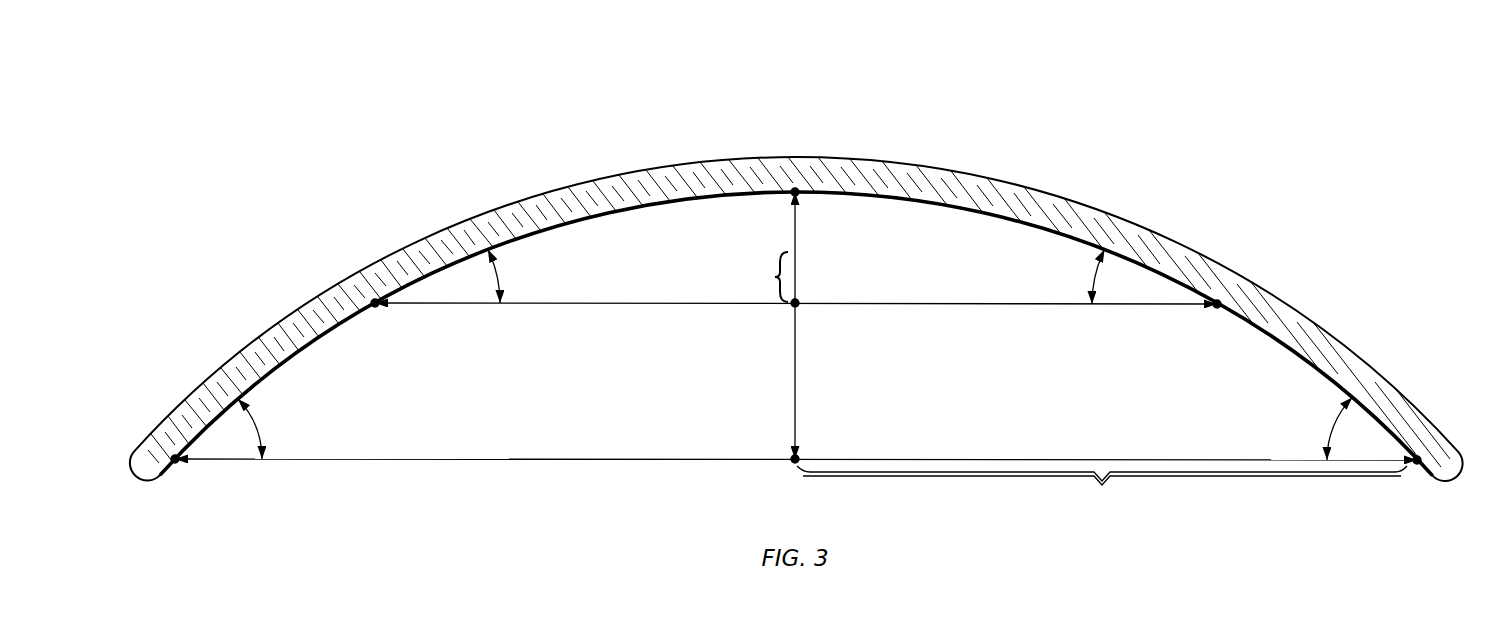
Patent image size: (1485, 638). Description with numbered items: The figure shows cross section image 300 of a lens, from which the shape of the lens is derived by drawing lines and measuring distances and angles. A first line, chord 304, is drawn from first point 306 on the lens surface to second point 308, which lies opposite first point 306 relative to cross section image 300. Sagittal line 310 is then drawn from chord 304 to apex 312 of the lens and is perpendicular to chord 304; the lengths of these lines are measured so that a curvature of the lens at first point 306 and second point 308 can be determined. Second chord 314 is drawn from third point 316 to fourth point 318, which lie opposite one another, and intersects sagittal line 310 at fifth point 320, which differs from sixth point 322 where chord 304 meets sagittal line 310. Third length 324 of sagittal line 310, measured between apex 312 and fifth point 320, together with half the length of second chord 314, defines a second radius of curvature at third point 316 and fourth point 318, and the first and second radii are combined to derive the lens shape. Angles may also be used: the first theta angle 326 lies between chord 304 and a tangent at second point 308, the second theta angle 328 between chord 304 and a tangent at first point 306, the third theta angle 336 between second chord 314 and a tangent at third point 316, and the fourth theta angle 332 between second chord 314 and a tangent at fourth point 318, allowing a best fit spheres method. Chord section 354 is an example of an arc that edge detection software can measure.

The cross section image 300 is at (568, 125).
The chord 304 is at (538, 464).
The first point 306 is at (1416, 467).
The second point 308 is at (179, 464).
The sagittal line 310 is at (793, 386).
The apex 312 is at (800, 197).
The second chord 314 is at (607, 310).
The third point 316 is at (379, 309).
The fourth point 318 is at (1215, 310).
The fifth point 320 is at (798, 309).
The sixth point 322 is at (799, 453).
The third length 324 is at (760, 277).
The angle θ1 326 is at (260, 428).
The angle θ2 328 is at (1331, 426).
The angle θ4 332 is at (1094, 278).
The angle θ3 336 is at (499, 273).
The chord section 354 is at (1102, 489).